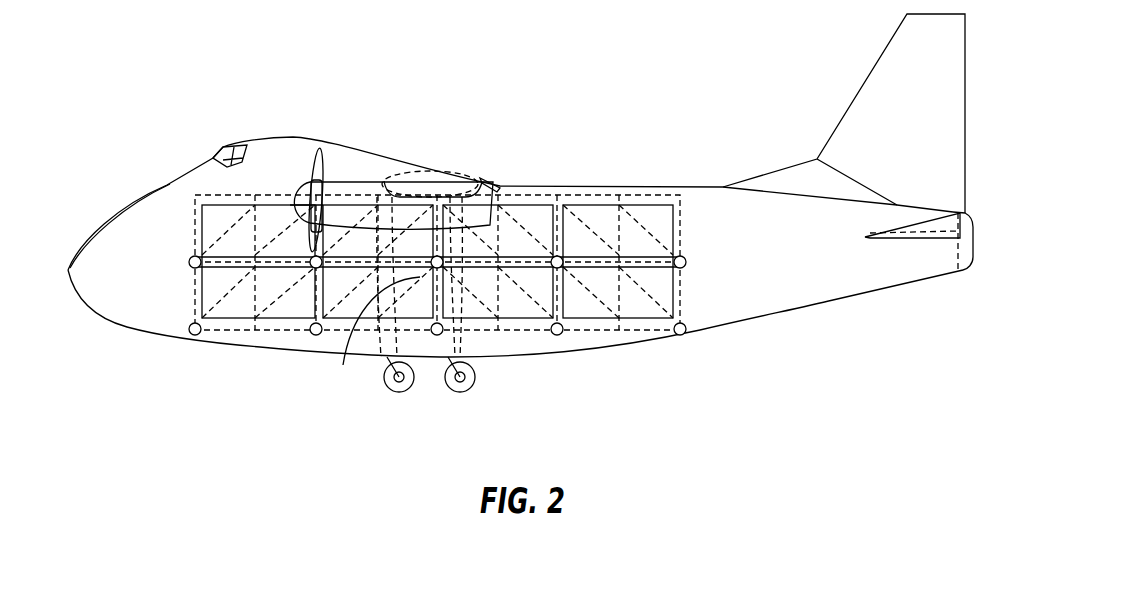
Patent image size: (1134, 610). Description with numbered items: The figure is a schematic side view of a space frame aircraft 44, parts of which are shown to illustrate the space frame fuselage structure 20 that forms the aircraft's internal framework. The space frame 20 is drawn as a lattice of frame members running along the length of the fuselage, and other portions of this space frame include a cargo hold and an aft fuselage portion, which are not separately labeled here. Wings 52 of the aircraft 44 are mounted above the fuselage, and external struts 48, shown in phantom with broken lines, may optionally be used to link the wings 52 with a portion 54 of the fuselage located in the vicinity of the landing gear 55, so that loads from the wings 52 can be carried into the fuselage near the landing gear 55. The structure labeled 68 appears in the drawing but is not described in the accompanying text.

The space frame fuselage structure 20 is at (650, 174).
The space frame aircraft 44 is at (173, 171).
The external struts 48 is at (375, 335).
The wings 52 is at (400, 172).
The portion of the fuselage 54 is at (478, 340).
The landing gear 55 is at (400, 393).
The structural truss frame 68 is at (595, 205).